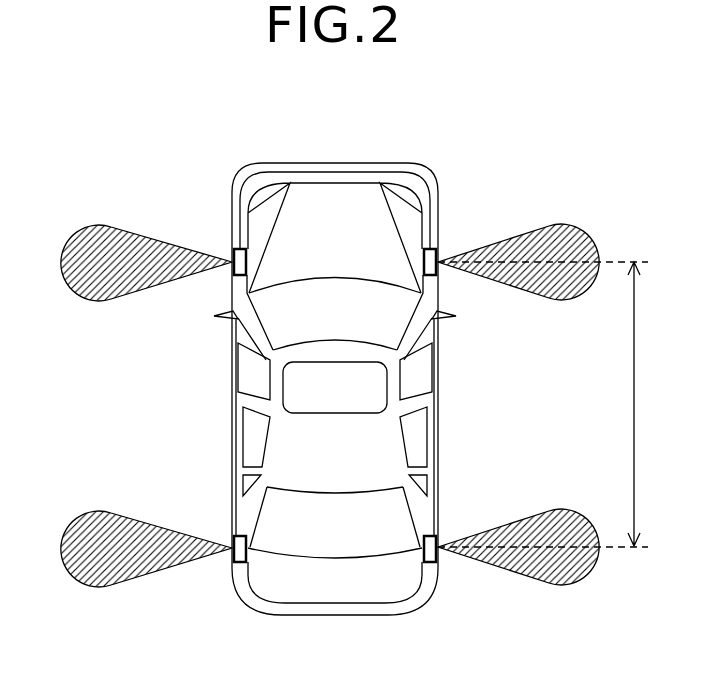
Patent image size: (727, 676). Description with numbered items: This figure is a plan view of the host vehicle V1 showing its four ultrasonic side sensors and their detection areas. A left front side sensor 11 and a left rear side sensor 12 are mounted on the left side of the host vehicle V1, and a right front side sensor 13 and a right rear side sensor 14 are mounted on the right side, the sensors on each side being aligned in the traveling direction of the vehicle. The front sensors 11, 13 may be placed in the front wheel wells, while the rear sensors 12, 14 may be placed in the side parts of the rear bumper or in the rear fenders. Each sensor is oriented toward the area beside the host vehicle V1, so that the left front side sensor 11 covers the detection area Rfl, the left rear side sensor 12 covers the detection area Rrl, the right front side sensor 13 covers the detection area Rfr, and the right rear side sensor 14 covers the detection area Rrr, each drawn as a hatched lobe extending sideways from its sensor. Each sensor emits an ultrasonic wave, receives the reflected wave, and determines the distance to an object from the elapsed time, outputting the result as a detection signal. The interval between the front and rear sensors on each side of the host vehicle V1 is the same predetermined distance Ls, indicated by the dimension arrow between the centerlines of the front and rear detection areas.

The host vehicle V1 is at (358, 163).
The left front side sensor 11 is at (237, 249).
The left rear side sensor 12 is at (237, 536).
The right front side sensor 13 is at (433, 249).
The right rear side sensor 14 is at (434, 536).
The detection area of the left front side sensor Rfl is at (90, 227).
The detection area of the right front side sensor Rfr is at (562, 225).
The detection area of the left rear side sensor Rrl is at (86, 587).
The detection area of the right rear side sensor Rrr is at (566, 586).
The predetermined distance Ls is at (554, 404).